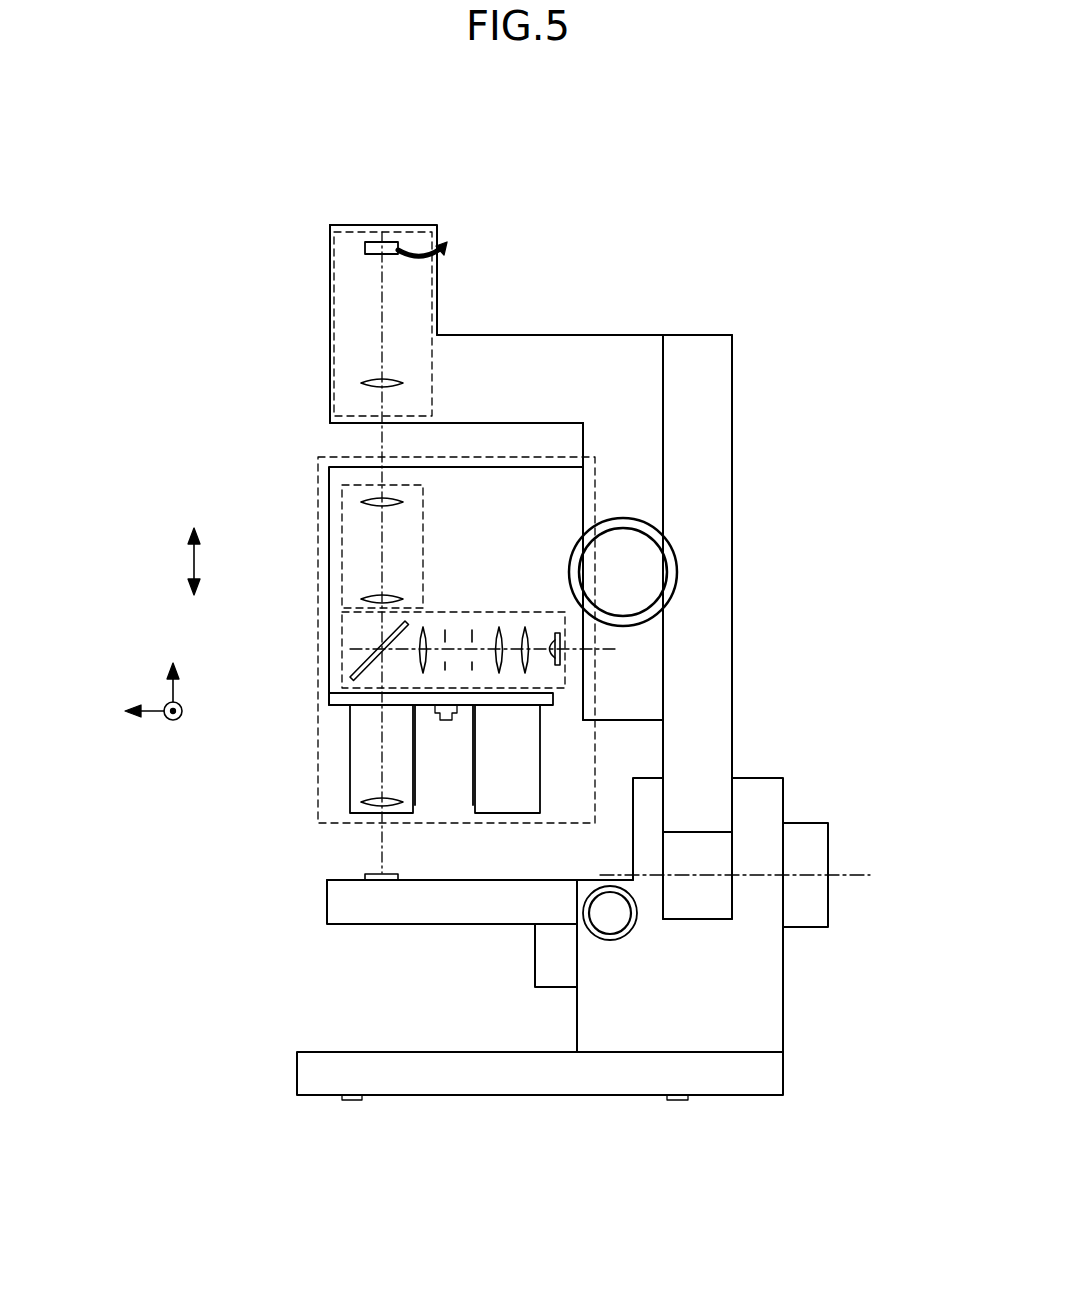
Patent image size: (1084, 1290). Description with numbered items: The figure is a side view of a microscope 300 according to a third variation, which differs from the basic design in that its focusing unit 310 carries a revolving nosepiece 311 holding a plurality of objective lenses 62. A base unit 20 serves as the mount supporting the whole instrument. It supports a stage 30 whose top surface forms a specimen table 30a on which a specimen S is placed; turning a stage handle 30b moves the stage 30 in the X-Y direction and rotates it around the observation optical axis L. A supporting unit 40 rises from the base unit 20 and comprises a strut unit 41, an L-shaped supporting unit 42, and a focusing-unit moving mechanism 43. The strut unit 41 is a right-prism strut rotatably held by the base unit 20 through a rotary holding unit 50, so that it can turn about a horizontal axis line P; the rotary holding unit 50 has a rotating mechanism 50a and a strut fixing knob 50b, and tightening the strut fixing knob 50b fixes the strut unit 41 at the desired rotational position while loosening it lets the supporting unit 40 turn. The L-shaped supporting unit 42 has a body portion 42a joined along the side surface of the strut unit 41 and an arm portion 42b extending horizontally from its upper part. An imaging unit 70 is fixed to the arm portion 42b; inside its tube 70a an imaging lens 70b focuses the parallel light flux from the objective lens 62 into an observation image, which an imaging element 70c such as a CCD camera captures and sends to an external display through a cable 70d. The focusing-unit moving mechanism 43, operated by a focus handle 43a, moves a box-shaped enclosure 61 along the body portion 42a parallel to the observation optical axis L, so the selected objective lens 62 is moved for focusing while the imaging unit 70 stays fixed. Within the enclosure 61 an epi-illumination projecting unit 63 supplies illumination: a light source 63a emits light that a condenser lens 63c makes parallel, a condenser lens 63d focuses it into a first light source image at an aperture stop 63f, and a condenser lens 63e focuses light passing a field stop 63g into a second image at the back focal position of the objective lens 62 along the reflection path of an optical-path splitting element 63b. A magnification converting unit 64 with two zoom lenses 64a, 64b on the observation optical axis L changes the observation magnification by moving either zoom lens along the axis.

The microscope 300 is at (713, 226).
The imaging unit 70 is at (325, 262).
The tube 70a is at (360, 310).
The imaging lens 70b is at (363, 383).
The imaging element 70c is at (380, 242).
The cable 70d is at (447, 240).
The L-shaped supporting unit 42 is at (550, 318).
The body portion 42a is at (635, 652).
The arm portion 42b is at (485, 345).
The supporting unit 40 is at (697, 318).
The strut unit 41 is at (712, 608).
The focusing-unit moving mechanism 43 is at (623, 508).
The focus handle 43a is at (635, 565).
The focusing unit 310 is at (318, 463).
The enclosure 61 is at (329, 492).
The revolving nosepiece 311 is at (333, 713).
The magnification converting unit 64 is at (342, 576).
The zoom lens 64a is at (363, 599).
The zoom lens 64b is at (363, 502).
The epi-illumination projecting unit 63 is at (342, 655).
The light source 63a is at (550, 660).
The optical-path splitting element 63b is at (350, 678).
The condenser lens 63c is at (525, 627).
The condenser lens 63d is at (499, 627).
The condenser lens 63e is at (423, 675).
The aperture stop 63f is at (472, 630).
The field stop 63g is at (445, 630).
The objective lens 62 is at (405, 797).
The observation optical axis L is at (380, 853).
The specimen S is at (366, 873).
The stage 30 is at (555, 955).
The specimen table 30a is at (330, 878).
The stage handle 30b is at (613, 915).
The base unit 20 is at (532, 1063).
The rotary holding unit 50 is at (868, 775).
The rotating mechanism 50a is at (705, 853).
The strut fixing knob 50b is at (803, 855).
The horizontal axis line P is at (850, 872).